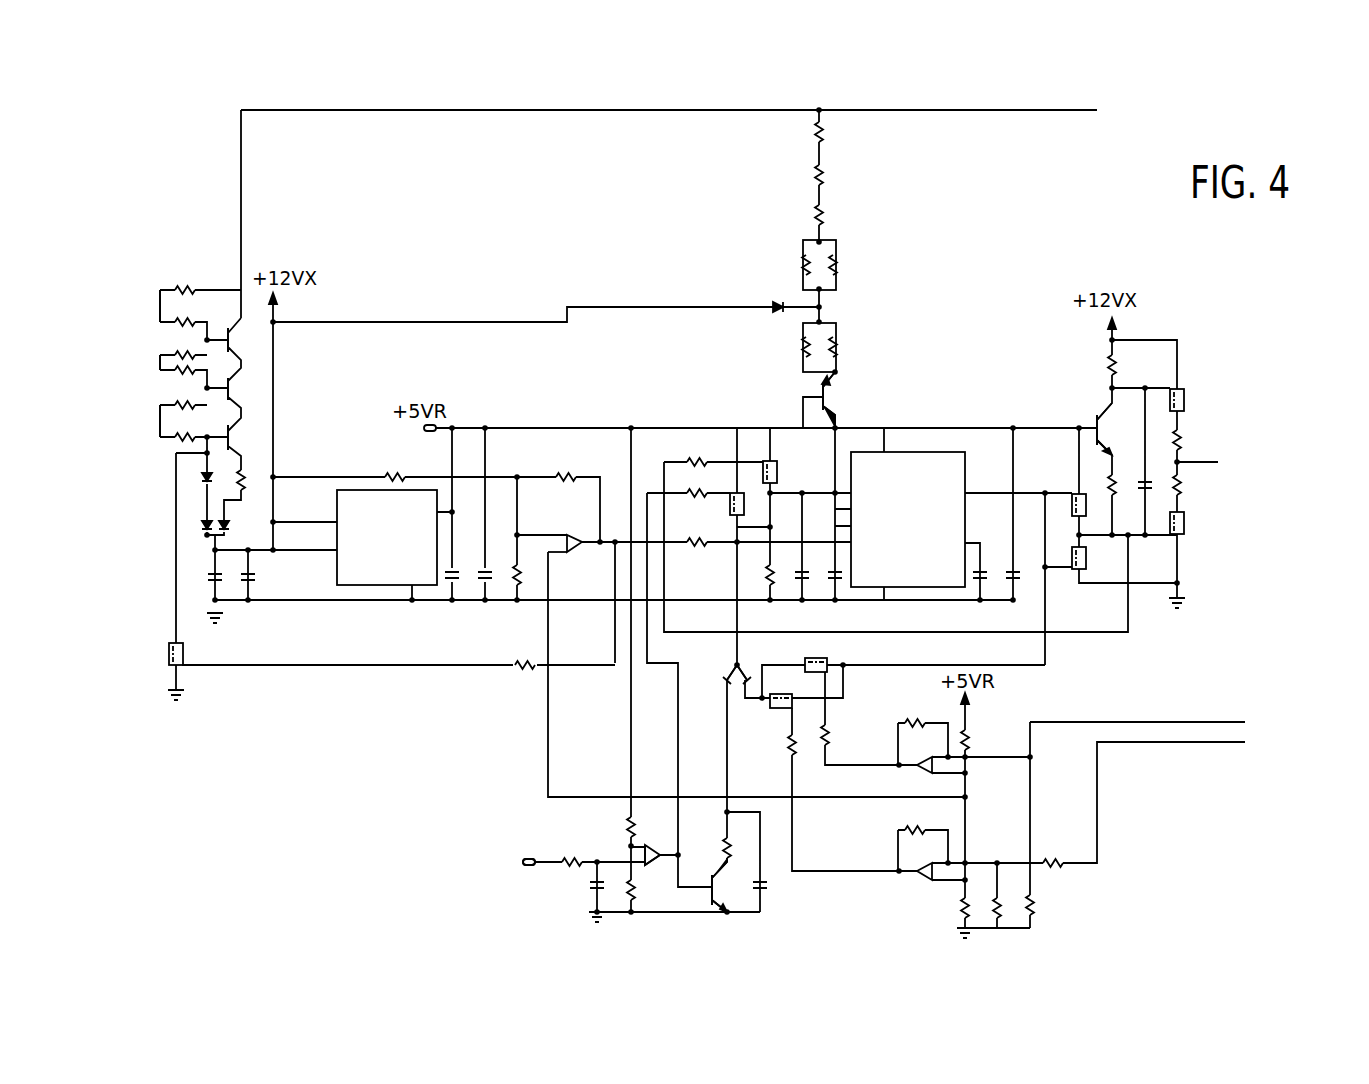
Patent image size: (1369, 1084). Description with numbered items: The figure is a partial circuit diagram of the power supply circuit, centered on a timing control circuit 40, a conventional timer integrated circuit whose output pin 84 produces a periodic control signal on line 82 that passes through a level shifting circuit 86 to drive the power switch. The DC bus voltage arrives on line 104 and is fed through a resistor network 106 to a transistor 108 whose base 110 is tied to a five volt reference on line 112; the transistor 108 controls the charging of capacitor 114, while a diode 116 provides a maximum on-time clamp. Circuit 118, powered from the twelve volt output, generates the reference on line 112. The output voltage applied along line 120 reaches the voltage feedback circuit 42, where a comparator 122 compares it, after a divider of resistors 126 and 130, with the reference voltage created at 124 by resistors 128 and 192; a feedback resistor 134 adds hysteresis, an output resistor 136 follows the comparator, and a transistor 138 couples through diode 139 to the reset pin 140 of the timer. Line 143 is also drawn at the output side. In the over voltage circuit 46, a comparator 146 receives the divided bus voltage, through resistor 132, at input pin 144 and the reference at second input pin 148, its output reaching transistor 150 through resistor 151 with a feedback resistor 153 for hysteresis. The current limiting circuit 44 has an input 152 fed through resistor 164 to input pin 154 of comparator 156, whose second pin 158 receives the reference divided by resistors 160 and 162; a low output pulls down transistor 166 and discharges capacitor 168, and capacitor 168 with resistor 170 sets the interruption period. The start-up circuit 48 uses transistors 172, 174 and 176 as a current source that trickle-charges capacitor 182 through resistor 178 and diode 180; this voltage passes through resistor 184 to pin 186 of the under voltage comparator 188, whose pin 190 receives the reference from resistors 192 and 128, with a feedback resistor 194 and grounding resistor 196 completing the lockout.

The timing control circuit 40 is at (923, 451).
The voltage feedback circuit 42 is at (880, 912).
The current limiting circuit 44 is at (535, 830).
The over voltage circuit 46 is at (943, 712).
The start-up circuit 48 is at (258, 258).
The line 82 is at (1198, 462).
The output pin 84 is at (990, 496).
The level shifting circuit 86 is at (1207, 375).
The line 104 is at (912, 110).
The resistor network 106 is at (857, 262).
The transistor 108 is at (832, 405).
The base 110 is at (803, 402).
The line 112 is at (533, 428).
The capacitor 114 is at (835, 583).
The diode 116 is at (776, 311).
The circuit 118 is at (337, 575).
The line 120 is at (1168, 743).
The comparator 122 is at (912, 878).
The reference voltage 124 is at (967, 818).
The resistor 126 is at (1055, 863).
The resistor 128 is at (965, 900).
The resistor 130 is at (998, 897).
The resistor 132 is at (1030, 898).
The feedback resistor 134 is at (912, 829).
The output resistor 136 is at (791, 735).
The transistor 138 is at (781, 694).
The diode 139 is at (746, 683).
The reset pin 140 is at (815, 540).
The output line 143 is at (1147, 720).
The input pin 144 is at (975, 757).
The comparator 146 is at (915, 770).
The second input pin 148 is at (952, 773).
The transistor 150 is at (826, 660).
The resistor 151 is at (829, 740).
The input 152 is at (523, 865).
The feedback resistor 153 is at (912, 722).
The input pin 154 is at (612, 860).
The comparator 156 is at (668, 852).
The second pin 158 is at (635, 846).
The resistor 160 is at (628, 820).
The resistor 162 is at (631, 887).
The resistor 164 is at (578, 865).
The transistor 166 is at (715, 880).
The capacitor 168 is at (758, 887).
The resistor 170 is at (690, 548).
The transistor 172 is at (230, 333).
The transistor 174 is at (230, 382).
The transistor 176 is at (230, 432).
The resistor 178 is at (244, 468).
The diode 180 is at (222, 532).
The capacitor 182 is at (215, 577).
The resistor 184 is at (396, 470).
The pin 186 is at (537, 530).
The under voltage comparator 188 is at (579, 532).
The pin 190 is at (550, 590).
The resistor 192 is at (968, 740).
The feedback resistor 194 is at (566, 470).
The grounding resistor 196 is at (515, 595).